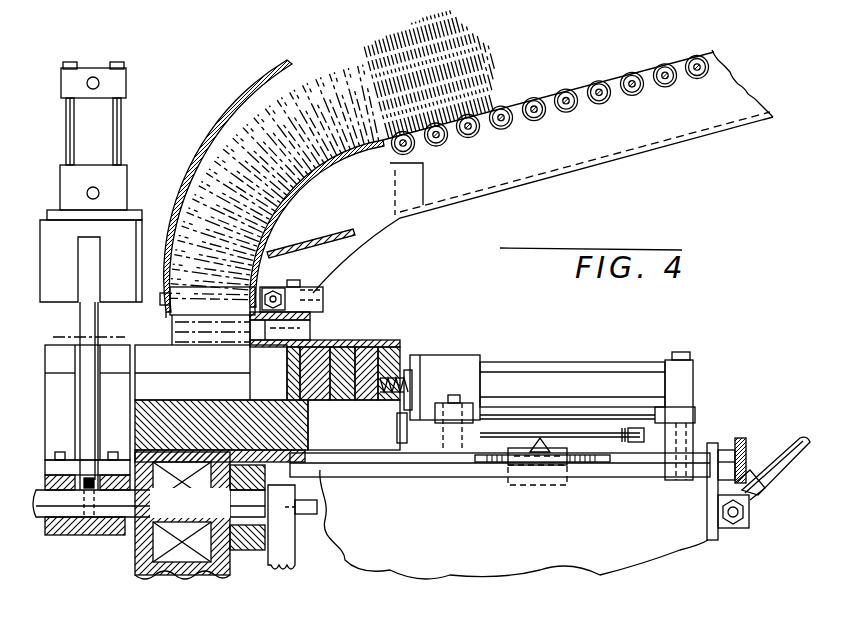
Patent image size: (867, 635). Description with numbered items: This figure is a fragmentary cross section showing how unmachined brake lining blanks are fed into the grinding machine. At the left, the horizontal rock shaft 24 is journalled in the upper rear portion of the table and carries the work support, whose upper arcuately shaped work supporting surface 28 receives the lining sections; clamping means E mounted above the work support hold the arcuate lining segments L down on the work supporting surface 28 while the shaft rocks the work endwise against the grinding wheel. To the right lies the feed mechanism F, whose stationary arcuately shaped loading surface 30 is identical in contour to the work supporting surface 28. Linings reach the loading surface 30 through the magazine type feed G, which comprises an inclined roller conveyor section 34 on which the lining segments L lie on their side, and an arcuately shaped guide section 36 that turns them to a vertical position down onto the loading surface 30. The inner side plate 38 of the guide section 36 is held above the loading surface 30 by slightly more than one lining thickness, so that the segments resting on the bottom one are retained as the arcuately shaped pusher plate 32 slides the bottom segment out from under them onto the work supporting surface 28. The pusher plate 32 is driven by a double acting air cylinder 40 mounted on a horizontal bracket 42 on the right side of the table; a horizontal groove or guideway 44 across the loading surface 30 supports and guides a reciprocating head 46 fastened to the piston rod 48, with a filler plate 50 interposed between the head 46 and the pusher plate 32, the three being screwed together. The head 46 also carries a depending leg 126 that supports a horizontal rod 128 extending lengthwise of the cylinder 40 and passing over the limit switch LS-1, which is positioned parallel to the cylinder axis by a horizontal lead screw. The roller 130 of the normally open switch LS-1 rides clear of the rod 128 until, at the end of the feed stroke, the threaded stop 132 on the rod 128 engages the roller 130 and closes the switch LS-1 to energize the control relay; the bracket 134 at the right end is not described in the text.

The rock shaft 24 is at (115, 505).
The work supporting surface 28 is at (42, 340).
The loading surface 30 is at (156, 345).
The pusher plate 32 is at (378, 346).
The roller conveyor section 34 is at (612, 138).
The guide section 36 is at (300, 190).
The inner side plate 38 is at (230, 116).
The air cylinder 40 is at (525, 366).
The horizontal bracket 42 is at (455, 540).
The guideway 44 is at (228, 396).
The reciprocating head 46 is at (350, 400).
The piston rod 48 is at (416, 352).
The filler plate 50 is at (400, 372).
The depending leg 126 is at (410, 418).
The horizontal rod 128 is at (608, 440).
The roller 130 is at (540, 438).
The threaded stop 132 is at (640, 428).
The end bracket 134 is at (684, 458).
The clamping means E is at (131, 183).
The feed mechanism F is at (330, 338).
The magazine type feed G is at (283, 68).
The lining segments L is at (366, 62).
The limit switch LS-1 is at (520, 486).